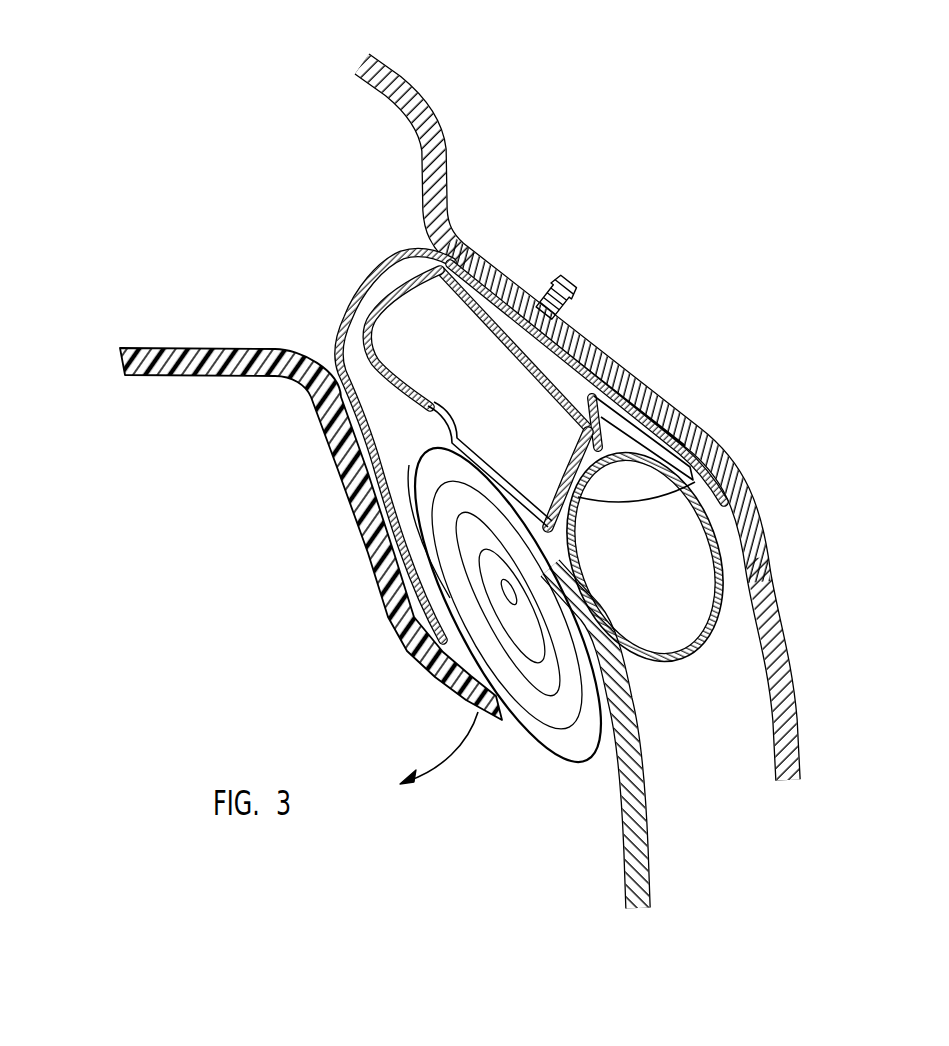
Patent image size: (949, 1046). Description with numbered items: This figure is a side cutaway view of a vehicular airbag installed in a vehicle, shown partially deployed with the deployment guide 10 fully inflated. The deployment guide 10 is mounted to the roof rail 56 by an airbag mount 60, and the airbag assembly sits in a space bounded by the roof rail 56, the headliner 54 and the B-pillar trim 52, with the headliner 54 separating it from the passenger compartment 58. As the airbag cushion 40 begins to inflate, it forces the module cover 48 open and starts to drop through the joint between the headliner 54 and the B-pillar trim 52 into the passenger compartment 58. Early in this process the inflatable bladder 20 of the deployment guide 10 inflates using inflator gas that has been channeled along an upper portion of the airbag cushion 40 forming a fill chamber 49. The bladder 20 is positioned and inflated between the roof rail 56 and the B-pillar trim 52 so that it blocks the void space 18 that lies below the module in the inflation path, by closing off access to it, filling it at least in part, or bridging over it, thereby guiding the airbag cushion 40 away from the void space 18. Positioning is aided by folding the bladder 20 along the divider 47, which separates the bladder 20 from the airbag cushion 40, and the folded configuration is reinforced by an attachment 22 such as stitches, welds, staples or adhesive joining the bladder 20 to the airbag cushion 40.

The deployment guide 10 is at (566, 481).
The void space 18 is at (716, 760).
The inflatable bladder 20 is at (667, 567).
The attachment 22 is at (668, 497).
The airbag cushion 40 is at (545, 683).
The divider 47 is at (650, 403).
The module cover 48 is at (400, 256).
The fill chamber 49 is at (461, 352).
The B-pillar trim 52 is at (627, 862).
The headliner 54 is at (385, 610).
The roof rail 56 is at (787, 687).
The passenger compartment 58 is at (216, 644).
The airbag mount 60 is at (573, 292).